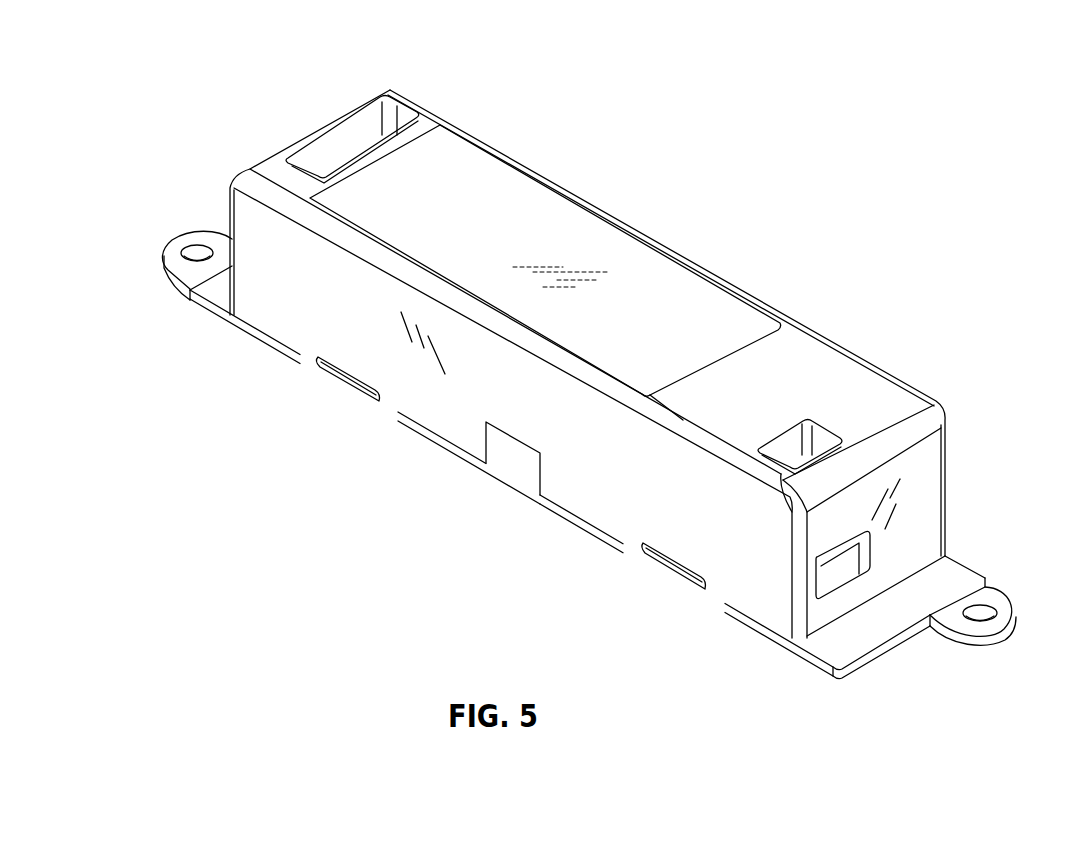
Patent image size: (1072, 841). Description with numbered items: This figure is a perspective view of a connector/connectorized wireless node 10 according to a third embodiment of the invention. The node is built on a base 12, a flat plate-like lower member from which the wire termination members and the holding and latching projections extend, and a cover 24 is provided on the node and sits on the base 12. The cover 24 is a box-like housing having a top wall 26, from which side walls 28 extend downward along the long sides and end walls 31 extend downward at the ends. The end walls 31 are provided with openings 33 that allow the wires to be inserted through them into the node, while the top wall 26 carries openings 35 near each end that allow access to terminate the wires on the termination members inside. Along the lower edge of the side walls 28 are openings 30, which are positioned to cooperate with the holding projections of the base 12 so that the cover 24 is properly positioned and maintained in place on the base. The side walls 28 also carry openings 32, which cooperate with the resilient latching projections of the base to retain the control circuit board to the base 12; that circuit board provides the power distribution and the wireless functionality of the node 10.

The connector/connectorized wireless node 10 is at (604, 380).
The base 12 is at (779, 644).
The cover 24 is at (619, 358).
The top wall 26 is at (790, 345).
The side walls 28 is at (307, 322).
The openings 30 is at (380, 410).
The end walls 31 is at (930, 483).
The openings 32 is at (540, 467).
The openings 33 is at (843, 565).
The openings 35 is at (378, 122).